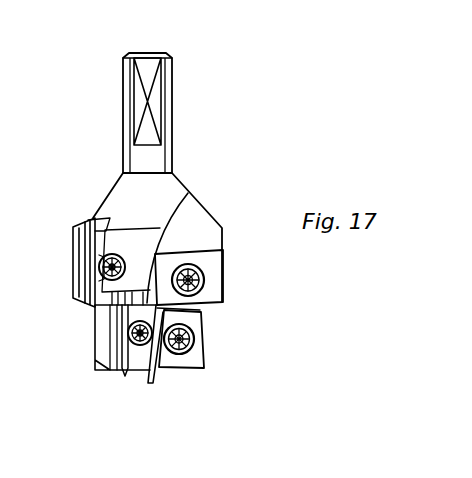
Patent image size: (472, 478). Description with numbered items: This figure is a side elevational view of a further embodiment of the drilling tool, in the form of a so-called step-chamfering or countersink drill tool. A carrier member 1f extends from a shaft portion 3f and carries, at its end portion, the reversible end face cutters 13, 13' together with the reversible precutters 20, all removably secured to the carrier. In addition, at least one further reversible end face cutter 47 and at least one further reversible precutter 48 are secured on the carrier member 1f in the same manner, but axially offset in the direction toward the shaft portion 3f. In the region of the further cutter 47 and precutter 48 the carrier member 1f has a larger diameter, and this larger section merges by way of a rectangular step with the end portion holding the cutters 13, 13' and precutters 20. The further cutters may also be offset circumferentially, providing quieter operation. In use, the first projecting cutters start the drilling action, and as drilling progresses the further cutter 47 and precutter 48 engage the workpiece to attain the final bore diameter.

The shaft portion 3f is at (172, 92).
The carrier member 1f is at (207, 207).
The further reversible end face cutter 47 is at (212, 263).
The further reversible precutter 48 is at (90, 260).
The reversible precutter 20 is at (111, 362).
The reversible end face cutter 13 is at (203, 363).
The reversible end face cutter 13' is at (140, 333).